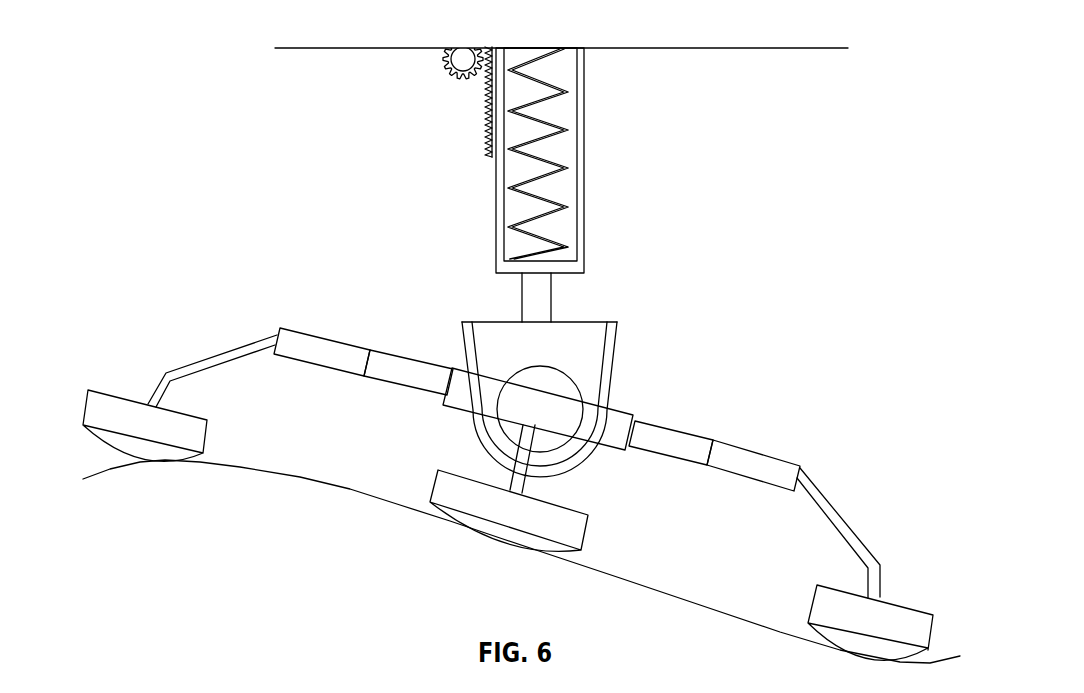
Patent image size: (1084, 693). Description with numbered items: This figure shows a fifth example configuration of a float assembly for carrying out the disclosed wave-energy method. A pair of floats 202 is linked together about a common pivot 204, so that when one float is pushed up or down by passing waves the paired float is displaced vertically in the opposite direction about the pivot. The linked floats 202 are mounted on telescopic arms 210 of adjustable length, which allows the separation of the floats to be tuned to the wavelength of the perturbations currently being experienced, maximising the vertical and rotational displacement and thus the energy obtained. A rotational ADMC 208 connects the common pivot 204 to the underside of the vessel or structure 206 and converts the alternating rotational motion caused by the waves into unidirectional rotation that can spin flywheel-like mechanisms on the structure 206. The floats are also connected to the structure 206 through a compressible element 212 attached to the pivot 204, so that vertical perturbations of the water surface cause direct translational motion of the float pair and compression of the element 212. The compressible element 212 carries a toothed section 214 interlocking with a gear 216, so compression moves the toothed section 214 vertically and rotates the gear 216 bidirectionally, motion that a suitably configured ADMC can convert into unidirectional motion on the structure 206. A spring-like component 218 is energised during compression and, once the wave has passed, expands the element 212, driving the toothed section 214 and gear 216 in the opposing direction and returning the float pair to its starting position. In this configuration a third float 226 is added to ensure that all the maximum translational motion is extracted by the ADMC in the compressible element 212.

The float 202 is at (125, 442).
The common pivot 204 is at (528, 407).
The vessel or structure 206 is at (363, 40).
The rotational ADMC 208 is at (555, 360).
The telescopic arms 210 is at (308, 340).
The compressible element 212 is at (493, 250).
The toothed section 214 is at (485, 122).
The gear 216 is at (455, 75).
The spring-like component 218 is at (507, 182).
The third float 226 is at (508, 518).